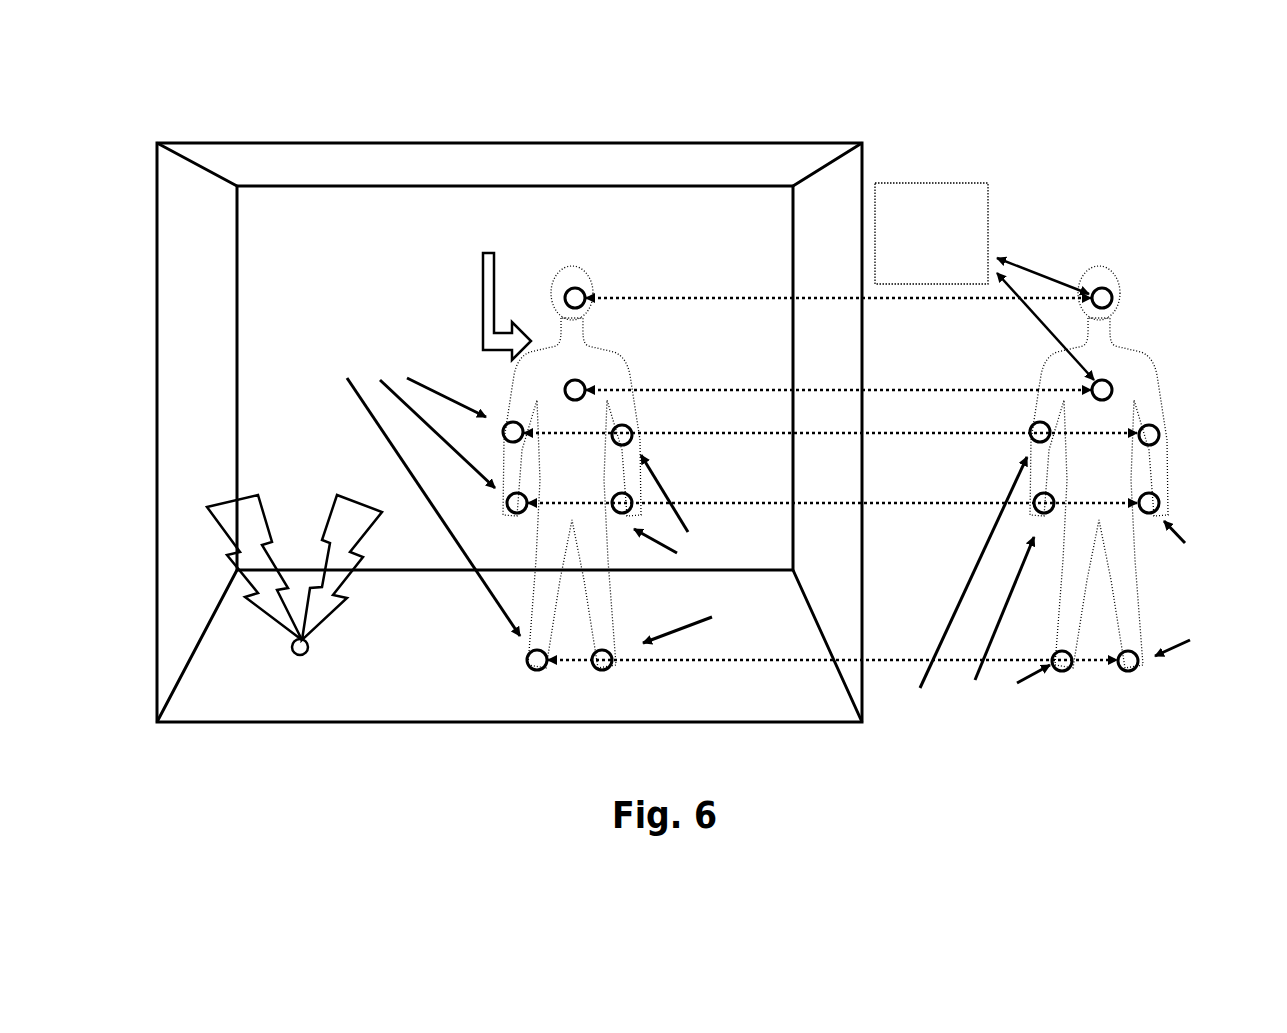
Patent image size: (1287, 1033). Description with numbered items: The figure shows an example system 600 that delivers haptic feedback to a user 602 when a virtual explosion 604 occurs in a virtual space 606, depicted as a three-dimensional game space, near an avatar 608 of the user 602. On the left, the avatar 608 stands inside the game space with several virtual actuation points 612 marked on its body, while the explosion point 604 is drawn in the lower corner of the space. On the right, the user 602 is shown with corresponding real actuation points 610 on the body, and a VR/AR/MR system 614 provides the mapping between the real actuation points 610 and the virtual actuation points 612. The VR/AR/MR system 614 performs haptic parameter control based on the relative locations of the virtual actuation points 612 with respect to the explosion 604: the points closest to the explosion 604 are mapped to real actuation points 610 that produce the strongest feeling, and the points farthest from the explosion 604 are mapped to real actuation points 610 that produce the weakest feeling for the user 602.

The system 600 is at (883, 76).
The user 602 is at (1136, 355).
The virtual explosion 604 is at (308, 645).
The virtual space 606 is at (721, 142).
The avatar 608 is at (616, 356).
The real actuation points 610 is at (1112, 290).
The virtual actuation points 612 is at (585, 290).
The VR/AR/MR system 614 is at (916, 266).